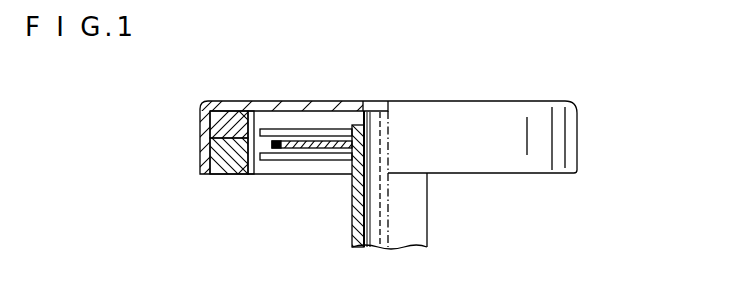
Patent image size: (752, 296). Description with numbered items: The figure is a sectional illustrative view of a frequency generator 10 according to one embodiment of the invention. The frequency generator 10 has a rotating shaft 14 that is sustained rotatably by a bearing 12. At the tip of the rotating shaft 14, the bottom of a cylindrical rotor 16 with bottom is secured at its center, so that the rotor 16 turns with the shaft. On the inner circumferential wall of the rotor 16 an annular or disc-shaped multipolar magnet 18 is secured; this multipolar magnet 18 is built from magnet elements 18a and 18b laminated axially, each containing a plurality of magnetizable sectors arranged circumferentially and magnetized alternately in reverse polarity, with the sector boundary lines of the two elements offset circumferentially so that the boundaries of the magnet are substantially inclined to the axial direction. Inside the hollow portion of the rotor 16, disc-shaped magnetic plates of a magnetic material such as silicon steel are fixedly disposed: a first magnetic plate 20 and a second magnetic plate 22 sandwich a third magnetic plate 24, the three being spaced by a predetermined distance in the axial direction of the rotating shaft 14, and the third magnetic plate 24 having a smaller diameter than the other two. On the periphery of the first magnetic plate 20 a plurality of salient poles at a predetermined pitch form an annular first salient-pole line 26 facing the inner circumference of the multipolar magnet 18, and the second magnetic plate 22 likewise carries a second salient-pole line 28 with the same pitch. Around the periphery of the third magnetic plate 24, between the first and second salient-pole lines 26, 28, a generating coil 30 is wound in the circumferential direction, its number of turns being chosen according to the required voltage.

The frequency generator 10 is at (141, 193).
The bearing 12 is at (352, 237).
The rotating shaft 14 is at (384, 117).
The rotor 16 is at (470, 125).
The multipolar magnet 18 is at (219, 118).
The magnet element 18a is at (210, 130).
The magnet element 18b is at (218, 175).
The first magnetic plate 20 is at (338, 125).
The second magnetic plate 22 is at (320, 160).
The third magnetic plate 24 is at (314, 141).
The first salient-pole line 26 is at (261, 125).
The second salient-pole line 28 is at (258, 169).
The generating coil 30 is at (276, 153).